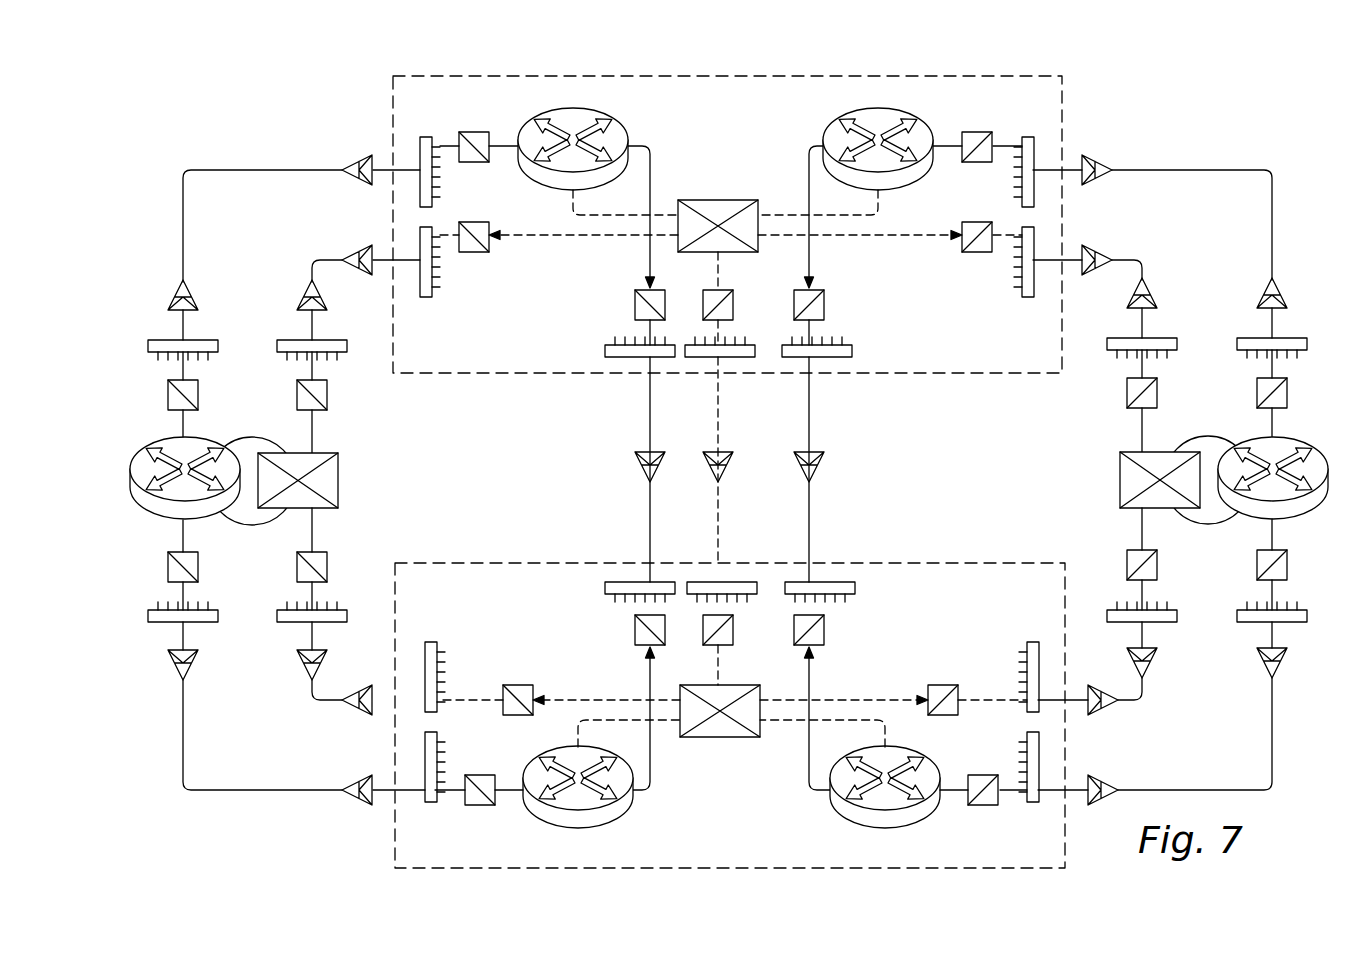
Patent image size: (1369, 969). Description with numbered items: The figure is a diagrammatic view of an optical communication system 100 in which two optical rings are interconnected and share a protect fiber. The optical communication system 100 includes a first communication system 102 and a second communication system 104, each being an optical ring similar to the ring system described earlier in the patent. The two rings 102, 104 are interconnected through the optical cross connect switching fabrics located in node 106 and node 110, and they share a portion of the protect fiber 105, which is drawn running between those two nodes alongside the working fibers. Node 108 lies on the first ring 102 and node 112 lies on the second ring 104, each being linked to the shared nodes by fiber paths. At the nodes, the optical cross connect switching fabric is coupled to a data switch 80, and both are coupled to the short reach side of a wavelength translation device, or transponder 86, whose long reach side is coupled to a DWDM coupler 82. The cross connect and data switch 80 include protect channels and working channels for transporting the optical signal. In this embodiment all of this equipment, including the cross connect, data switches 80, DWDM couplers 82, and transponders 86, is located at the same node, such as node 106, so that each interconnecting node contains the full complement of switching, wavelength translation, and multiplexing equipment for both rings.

The optical communication system 100 is at (232, 128).
The data switch 80 is at (608, 822).
The DWDM coupler 82 is at (430, 806).
The wavelength translation device 86 is at (480, 808).
The first communication system 102 is at (493, 478).
The second communication system 104 is at (996, 478).
The protect fiber 105 is at (710, 500).
The node 106 is at (730, 715).
The node 108 is at (303, 480).
The node 110 is at (727, 224).
The node 112 is at (1153, 480).